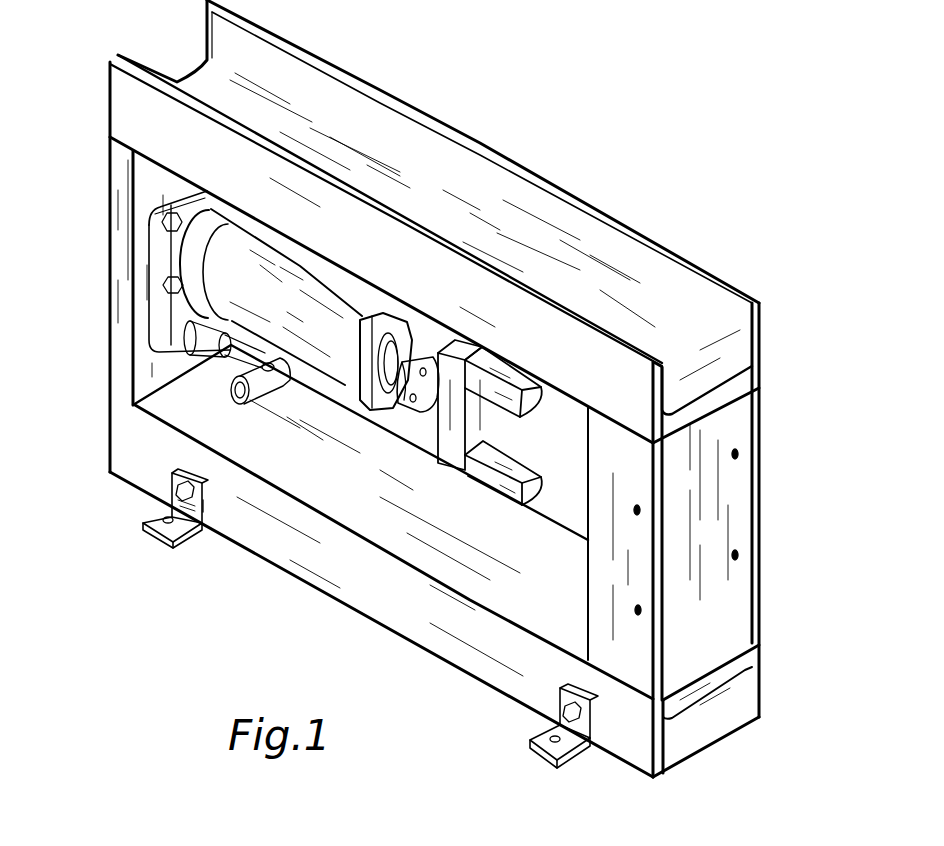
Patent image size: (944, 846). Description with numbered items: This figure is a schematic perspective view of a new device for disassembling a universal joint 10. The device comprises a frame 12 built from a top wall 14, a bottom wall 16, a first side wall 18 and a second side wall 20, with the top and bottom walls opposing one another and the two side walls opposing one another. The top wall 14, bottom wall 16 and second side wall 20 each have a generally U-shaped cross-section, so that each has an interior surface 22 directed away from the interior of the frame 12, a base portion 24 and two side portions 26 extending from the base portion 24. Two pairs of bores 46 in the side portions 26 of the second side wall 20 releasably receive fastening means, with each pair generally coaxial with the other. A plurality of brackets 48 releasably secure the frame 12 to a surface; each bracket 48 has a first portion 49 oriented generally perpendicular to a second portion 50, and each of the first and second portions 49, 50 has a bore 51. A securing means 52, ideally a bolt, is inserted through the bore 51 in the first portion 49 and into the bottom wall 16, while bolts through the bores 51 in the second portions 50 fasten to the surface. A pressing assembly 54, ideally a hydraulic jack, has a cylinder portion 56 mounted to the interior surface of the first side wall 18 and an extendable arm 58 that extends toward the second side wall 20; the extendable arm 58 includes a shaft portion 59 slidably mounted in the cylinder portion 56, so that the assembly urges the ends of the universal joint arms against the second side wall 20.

The device for disassembling a universal joint 10 is at (688, 177).
The frame 12 is at (760, 302).
The top wall 14 is at (517, 172).
The bottom wall 16 is at (490, 660).
The first side wall 18 is at (120, 238).
The second side wall 20 is at (753, 448).
The interior surface 22 is at (700, 350).
The base portion 24 is at (505, 548).
The side portions 26 is at (632, 737).
The bores 46 is at (637, 512).
The brackets 48 is at (173, 545).
The first portion 49 is at (205, 508).
The second portion 50 is at (160, 518).
The bore 51 is at (165, 525).
The securing means 52 is at (178, 491).
The pressing assembly 54 is at (387, 312).
The cylinder portion 56 is at (300, 277).
The extendable arm 58 is at (383, 427).
The shaft portion 59 is at (418, 345).